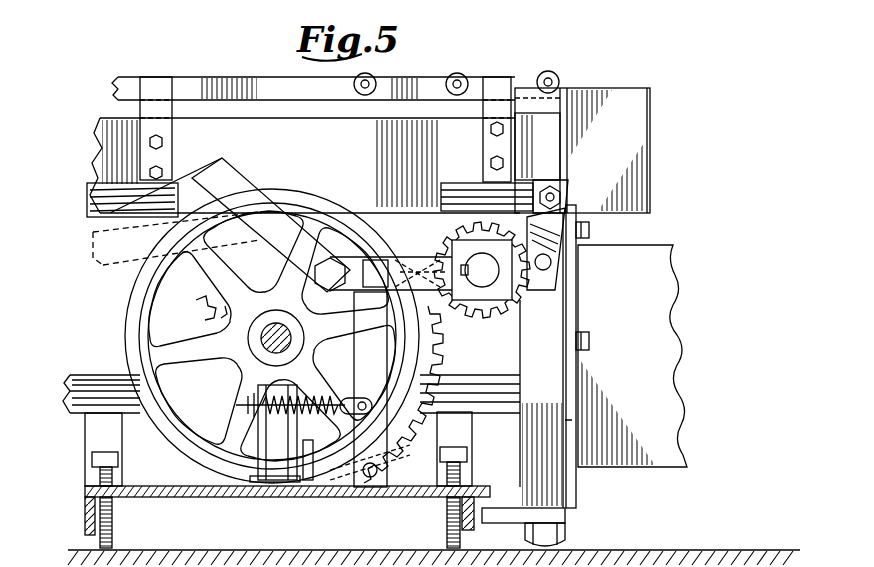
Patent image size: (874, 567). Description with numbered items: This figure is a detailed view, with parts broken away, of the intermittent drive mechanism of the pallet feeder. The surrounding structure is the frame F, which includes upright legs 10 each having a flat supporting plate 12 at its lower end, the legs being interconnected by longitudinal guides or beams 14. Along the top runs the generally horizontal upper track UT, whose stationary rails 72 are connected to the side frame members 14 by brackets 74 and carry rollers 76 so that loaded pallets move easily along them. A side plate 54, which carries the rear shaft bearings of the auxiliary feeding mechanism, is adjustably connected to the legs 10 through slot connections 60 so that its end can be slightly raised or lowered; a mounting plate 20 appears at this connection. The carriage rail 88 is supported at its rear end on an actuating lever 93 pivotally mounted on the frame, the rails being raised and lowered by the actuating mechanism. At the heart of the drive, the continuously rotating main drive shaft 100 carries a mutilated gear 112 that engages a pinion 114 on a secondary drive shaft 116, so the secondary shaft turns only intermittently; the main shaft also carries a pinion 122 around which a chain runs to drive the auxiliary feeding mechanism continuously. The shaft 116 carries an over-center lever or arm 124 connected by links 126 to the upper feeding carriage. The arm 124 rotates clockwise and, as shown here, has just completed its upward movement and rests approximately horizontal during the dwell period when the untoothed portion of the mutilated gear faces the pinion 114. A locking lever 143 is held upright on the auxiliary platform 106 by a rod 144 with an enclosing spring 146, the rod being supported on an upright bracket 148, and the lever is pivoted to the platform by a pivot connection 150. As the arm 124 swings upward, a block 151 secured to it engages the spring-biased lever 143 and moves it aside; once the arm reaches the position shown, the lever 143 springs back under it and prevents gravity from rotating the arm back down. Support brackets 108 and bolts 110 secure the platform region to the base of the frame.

The upper track UT is at (220, 69).
The stationary rails 72 is at (266, 78).
The brackets 74 is at (140, 110).
The rollers 76 is at (372, 75).
The longitudinal guides or beams 14 is at (97, 141).
The rail 88 is at (452, 183).
The legs 10 is at (565, 493).
The supporting plate 12 is at (566, 516).
The mounting plate 20 is at (576, 285).
The slot connections 60 is at (590, 232).
The actuating lever 93 is at (574, 252).
The side plates 54 is at (665, 300).
The mutilated gear 112 is at (126, 338).
The main drive shaft 100 is at (262, 345).
The pinion 122 is at (200, 312).
The links 126 is at (222, 162).
The over-center lever 124 is at (428, 258).
The block 151 is at (348, 258).
The pinion 114 is at (512, 316).
The secondary drive shaft 116 is at (486, 282).
The locking lever 143 is at (428, 354).
The spring 146 is at (258, 424).
The rod 144 is at (325, 414).
The bracket 148 is at (290, 444).
The pivot connection 150 is at (372, 480).
The support bracket 108 is at (88, 439).
The bolt 110 is at (98, 540).
The auxiliary platform 106 is at (172, 498).
The frame F is at (515, 483).